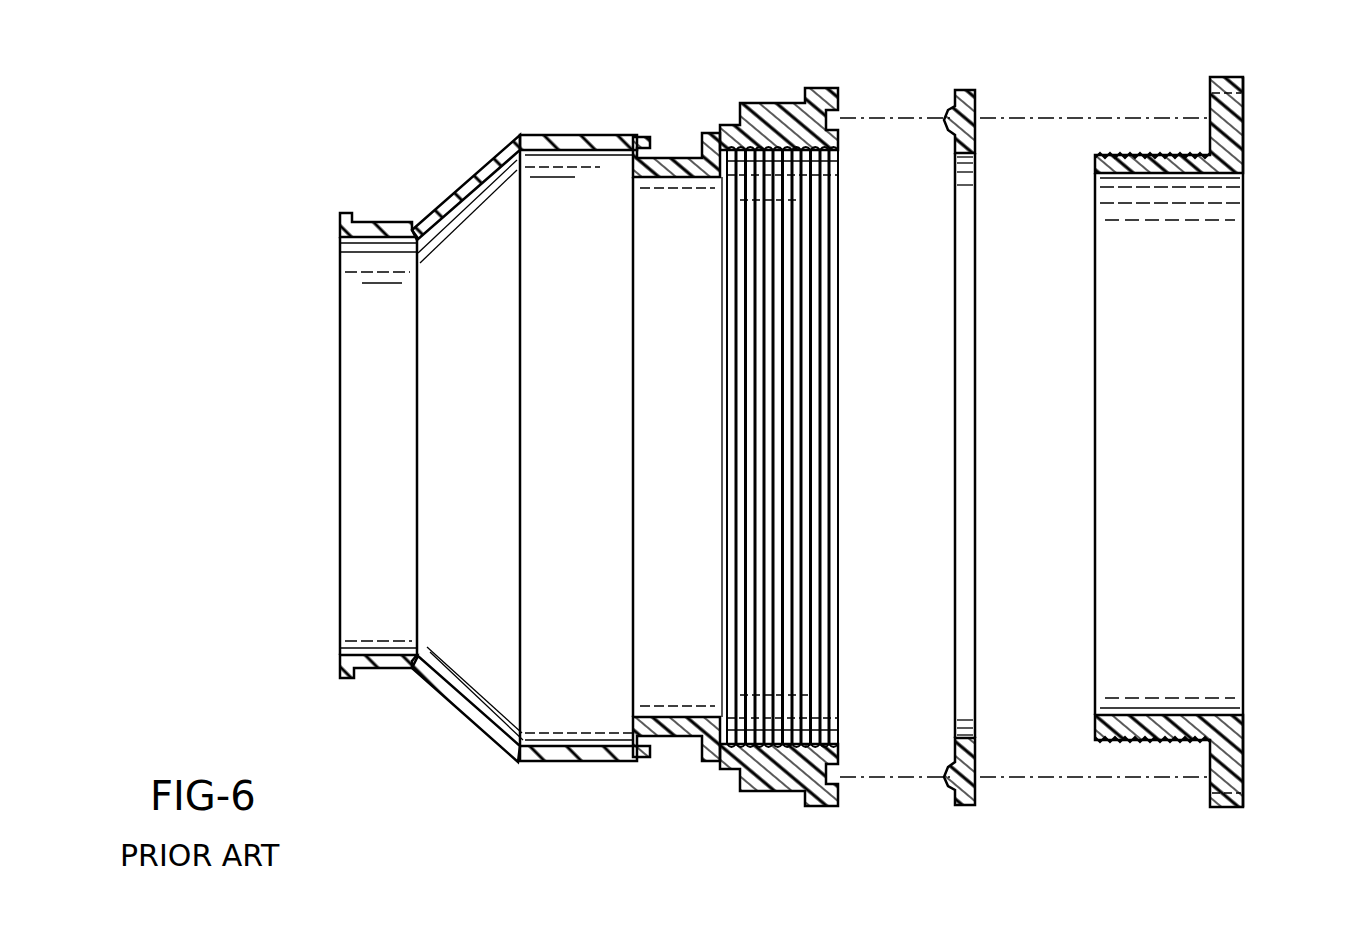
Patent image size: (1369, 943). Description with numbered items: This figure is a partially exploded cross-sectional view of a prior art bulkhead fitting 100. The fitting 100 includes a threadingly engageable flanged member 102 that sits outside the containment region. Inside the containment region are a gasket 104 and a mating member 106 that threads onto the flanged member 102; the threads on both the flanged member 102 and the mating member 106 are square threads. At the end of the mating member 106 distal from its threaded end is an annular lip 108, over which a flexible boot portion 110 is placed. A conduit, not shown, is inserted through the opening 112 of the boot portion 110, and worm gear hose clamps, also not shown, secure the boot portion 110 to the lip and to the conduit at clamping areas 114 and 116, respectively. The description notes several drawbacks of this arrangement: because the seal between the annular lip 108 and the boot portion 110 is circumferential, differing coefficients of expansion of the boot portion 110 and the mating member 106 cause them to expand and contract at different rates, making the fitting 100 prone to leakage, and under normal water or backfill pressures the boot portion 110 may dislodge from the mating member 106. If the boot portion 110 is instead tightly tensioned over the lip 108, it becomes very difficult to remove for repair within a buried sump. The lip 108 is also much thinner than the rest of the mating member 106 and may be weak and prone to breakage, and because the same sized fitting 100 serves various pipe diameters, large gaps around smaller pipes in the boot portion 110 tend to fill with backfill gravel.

The bulkhead fitting 100 is at (236, 155).
The flanged member 102 is at (1245, 80).
The gasket 104 is at (975, 93).
The mating member 106 is at (765, 108).
The annular lip 108 is at (678, 180).
The boot portion 110 is at (515, 137).
The opening 112 is at (378, 655).
The clamping area 114 is at (676, 158).
The clamping area 116 is at (368, 223).